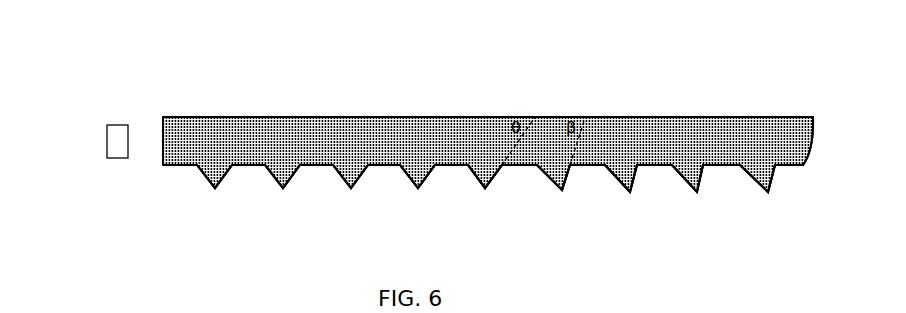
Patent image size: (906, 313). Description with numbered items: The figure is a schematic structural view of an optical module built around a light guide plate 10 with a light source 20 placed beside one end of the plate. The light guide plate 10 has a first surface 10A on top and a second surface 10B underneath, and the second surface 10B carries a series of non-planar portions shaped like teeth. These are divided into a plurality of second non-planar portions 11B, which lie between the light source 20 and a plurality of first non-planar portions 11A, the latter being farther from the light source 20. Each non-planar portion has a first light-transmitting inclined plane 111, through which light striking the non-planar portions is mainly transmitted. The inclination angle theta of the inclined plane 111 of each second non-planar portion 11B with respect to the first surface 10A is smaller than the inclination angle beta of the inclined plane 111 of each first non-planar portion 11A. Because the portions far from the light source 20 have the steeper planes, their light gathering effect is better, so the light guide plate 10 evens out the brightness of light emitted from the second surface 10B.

The light guide plate 10 is at (363, 137).
The first surface 10A is at (658, 118).
The second surface 10B is at (192, 188).
The first non-planar portions 11A is at (560, 196).
The second non-planar portions 11B is at (482, 197).
The first light-transmitting inclined plane 111 is at (493, 179).
The light source 20 is at (118, 128).